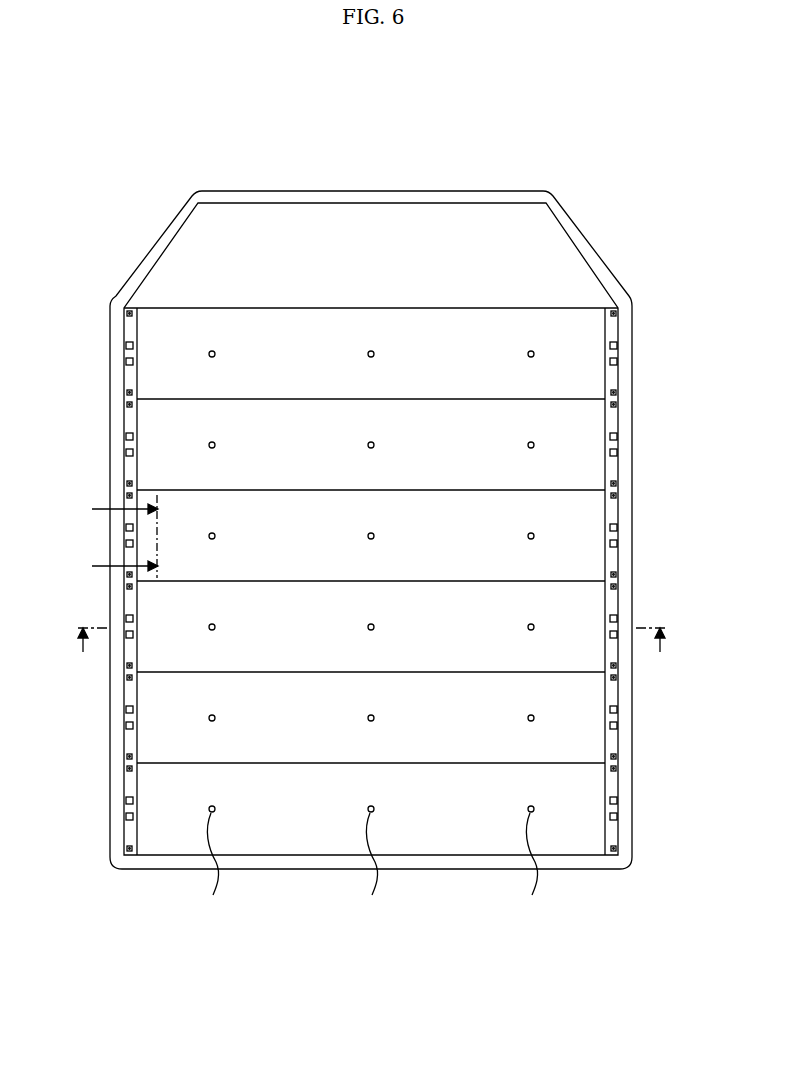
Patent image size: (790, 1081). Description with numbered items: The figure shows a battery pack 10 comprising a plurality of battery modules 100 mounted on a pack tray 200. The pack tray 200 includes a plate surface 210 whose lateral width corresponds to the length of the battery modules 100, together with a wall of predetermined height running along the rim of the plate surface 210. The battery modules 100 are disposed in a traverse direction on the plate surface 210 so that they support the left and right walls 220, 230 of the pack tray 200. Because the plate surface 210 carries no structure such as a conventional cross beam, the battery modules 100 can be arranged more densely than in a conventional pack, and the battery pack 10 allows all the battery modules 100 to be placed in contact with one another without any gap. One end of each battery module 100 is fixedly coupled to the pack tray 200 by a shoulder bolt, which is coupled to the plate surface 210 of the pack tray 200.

The battery pack 10 is at (192, 85).
The battery module 100 is at (572, 370).
The pack tray 200 is at (187, 178).
The plate surface 210 is at (336, 232).
The left wall 220 is at (122, 362).
The right wall 230 is at (628, 341).